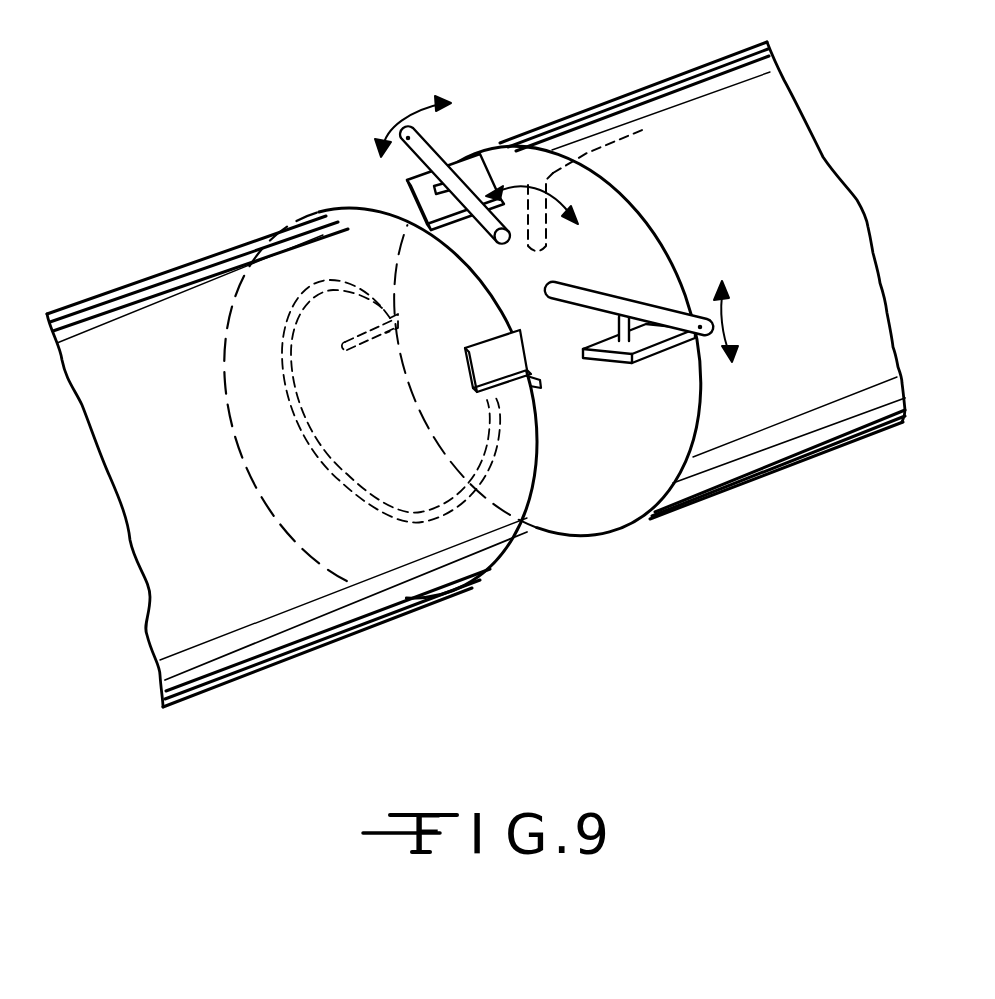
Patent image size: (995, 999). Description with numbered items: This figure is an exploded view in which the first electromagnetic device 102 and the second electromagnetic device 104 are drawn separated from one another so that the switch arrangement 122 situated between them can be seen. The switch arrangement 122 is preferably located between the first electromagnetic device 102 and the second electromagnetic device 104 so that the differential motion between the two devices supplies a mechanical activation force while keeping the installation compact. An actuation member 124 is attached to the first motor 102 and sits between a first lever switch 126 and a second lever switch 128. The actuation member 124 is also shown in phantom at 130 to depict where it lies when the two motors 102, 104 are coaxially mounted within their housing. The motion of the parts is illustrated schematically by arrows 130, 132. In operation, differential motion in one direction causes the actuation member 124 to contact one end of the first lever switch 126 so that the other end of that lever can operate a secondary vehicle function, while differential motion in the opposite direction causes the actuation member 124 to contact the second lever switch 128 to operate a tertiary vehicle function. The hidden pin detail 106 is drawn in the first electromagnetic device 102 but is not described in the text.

The first electromagnetic device 102 is at (190, 476).
The second electromagnetic device 104 is at (800, 187).
The pin 106 is at (320, 280).
The switch arrangement 122 is at (577, 394).
The actuation member 124 is at (445, 424).
The first lever switch 126 is at (437, 150).
The second lever switch 128 is at (650, 305).
The phantom position of actuation member 130 is at (783, 284).
The arrow 132 is at (397, 120).